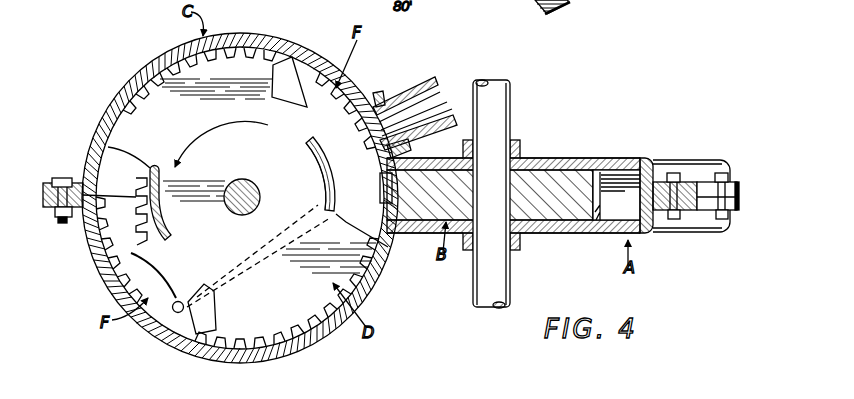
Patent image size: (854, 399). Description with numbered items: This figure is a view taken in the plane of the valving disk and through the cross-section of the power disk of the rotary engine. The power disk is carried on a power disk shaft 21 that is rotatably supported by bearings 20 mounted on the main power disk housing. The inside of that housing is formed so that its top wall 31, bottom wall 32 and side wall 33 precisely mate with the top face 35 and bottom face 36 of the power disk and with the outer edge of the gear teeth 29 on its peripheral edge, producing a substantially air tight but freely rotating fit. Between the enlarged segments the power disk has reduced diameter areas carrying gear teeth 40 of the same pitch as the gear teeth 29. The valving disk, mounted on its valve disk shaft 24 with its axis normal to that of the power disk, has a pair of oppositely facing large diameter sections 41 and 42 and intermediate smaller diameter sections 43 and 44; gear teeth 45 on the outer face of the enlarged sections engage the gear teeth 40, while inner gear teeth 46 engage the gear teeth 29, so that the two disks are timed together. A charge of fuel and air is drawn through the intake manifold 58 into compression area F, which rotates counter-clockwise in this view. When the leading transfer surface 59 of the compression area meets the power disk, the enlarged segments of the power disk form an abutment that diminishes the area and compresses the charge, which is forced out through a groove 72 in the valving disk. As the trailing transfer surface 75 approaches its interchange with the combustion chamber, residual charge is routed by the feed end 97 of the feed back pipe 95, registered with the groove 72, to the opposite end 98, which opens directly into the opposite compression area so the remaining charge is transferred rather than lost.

The gear teeth 45 is at (147, 92).
The transfer surface 59 is at (277, 82).
The gear teeth 46 is at (152, 223).
The large diameter section 42 is at (176, 126).
The smaller diameter section 44 is at (292, 128).
The large diameter section 41 is at (306, 296).
The valve disk shaft 24 is at (243, 177).
The groove 72 is at (313, 148).
The feed end 97 is at (327, 212).
The gear teeth 29 is at (383, 196).
The transfer surface 75 is at (122, 187).
The opposite end 98 is at (143, 269).
The smaller diameter section 43 is at (212, 283).
The feed back pipe 95 is at (265, 262).
The intake manifold 58 is at (440, 94).
The bearings 20 is at (518, 150).
The power disk shaft 21 is at (512, 288).
The top face 35 is at (577, 170).
The bottom face 36 is at (572, 234).
The bottom wall 32 is at (614, 219).
The gear teeth 40 is at (601, 215).
The top wall 31 is at (620, 160).
The side wall 33 is at (653, 163).